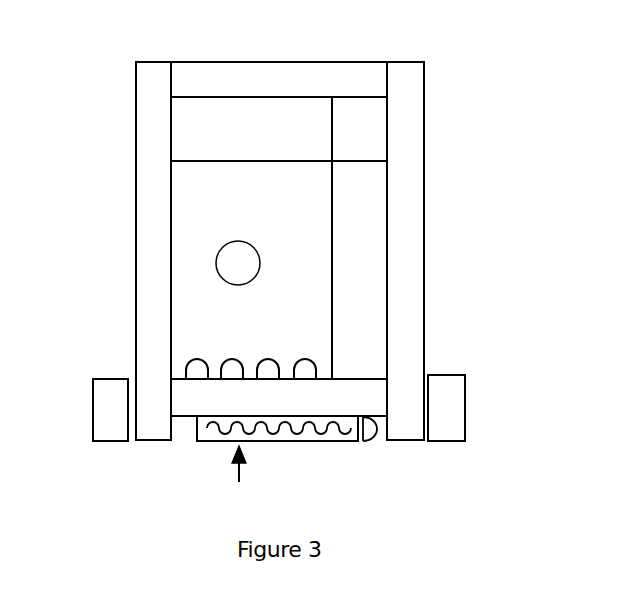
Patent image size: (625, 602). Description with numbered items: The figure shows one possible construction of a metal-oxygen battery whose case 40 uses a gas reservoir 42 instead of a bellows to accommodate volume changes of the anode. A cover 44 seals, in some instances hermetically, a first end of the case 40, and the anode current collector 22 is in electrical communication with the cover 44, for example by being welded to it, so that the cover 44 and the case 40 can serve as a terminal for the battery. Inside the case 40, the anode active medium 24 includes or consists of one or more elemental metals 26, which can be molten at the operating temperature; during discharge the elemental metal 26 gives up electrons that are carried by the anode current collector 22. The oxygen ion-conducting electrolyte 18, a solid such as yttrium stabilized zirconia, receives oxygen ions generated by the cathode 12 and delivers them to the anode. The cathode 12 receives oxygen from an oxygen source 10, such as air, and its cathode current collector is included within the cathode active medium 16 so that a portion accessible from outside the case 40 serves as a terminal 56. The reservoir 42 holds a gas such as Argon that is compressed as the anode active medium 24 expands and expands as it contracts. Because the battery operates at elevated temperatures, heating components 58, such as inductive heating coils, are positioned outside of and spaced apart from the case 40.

The oxygen source 10 is at (238, 477).
The cathode 12 is at (379, 437).
The cathode active medium 16 is at (198, 424).
The oxygen ion-conducting electrolyte 18 is at (181, 389).
The anode current collector 22 is at (332, 212).
The anode active medium 24 is at (186, 290).
The elemental metal 26 is at (260, 264).
The case 40 is at (398, 244).
The reservoir 42 is at (199, 143).
The cover 44 is at (207, 79).
The terminal 56 is at (353, 441).
The heating component 58 is at (110, 396).